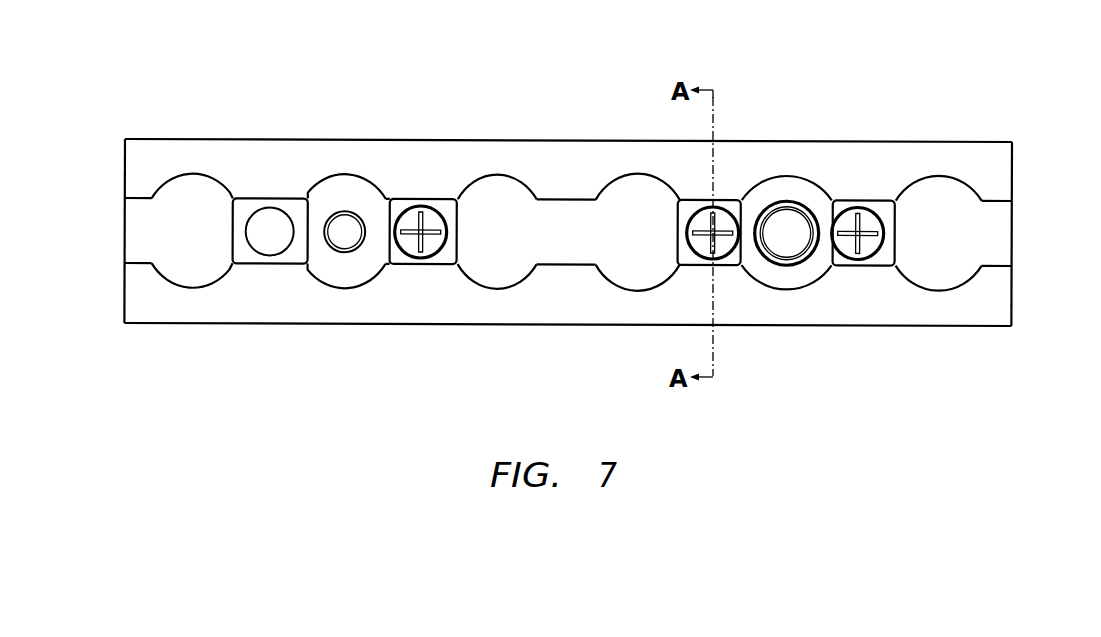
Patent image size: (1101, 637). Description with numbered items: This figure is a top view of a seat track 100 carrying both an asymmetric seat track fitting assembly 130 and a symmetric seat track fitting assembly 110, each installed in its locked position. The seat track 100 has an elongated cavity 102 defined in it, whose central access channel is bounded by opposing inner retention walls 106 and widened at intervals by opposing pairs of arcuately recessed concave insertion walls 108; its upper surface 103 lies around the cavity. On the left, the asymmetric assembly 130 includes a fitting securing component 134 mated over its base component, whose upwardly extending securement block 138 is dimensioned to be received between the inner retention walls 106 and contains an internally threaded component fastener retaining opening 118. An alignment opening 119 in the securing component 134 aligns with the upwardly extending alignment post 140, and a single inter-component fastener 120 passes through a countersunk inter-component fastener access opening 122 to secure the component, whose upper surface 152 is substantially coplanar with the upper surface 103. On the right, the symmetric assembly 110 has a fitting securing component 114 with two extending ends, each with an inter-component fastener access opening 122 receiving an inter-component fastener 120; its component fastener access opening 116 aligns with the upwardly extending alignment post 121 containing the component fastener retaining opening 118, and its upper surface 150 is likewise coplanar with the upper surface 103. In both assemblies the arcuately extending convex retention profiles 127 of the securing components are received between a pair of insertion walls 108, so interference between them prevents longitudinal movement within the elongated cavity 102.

The seat track 100 is at (1013, 153).
The elongated cavity 102 is at (128, 233).
The upper surface 103 is at (997, 307).
The inner retention walls 106 is at (127, 200).
The arcuately recessed concave insertion walls 108 is at (196, 173).
The symmetric seat track fitting assembly 110 is at (823, 264).
The fitting securing component 114 is at (900, 198).
The component fastener access opening 116 is at (799, 263).
The component fastener retaining opening 118 is at (273, 229).
The alignment opening 119 is at (358, 250).
The inter-component fastener 120 is at (432, 200).
The upwardly extending alignment post 121 is at (773, 262).
The inter-component fastener access opening 122 is at (407, 201).
The arcuately extending convex retention profiles 127 is at (366, 175).
The asymmetric seat track fitting assembly 130 is at (380, 260).
The fitting securing component 134 is at (455, 199).
The upwardly extending securement block 138 is at (237, 196).
The upwardly extending alignment post 140 is at (345, 238).
The upper surface 150 is at (750, 266).
The upper surface 152 is at (320, 272).